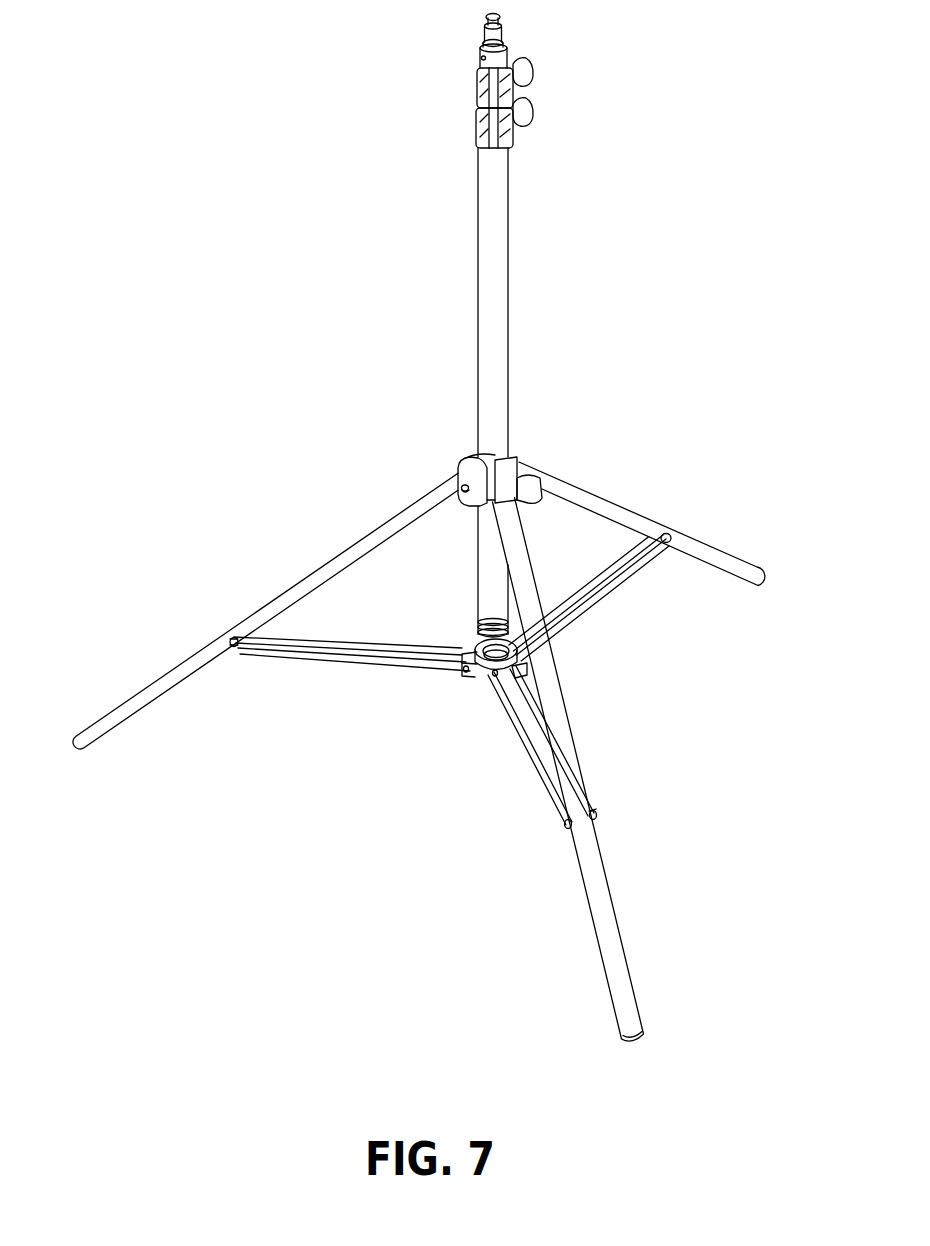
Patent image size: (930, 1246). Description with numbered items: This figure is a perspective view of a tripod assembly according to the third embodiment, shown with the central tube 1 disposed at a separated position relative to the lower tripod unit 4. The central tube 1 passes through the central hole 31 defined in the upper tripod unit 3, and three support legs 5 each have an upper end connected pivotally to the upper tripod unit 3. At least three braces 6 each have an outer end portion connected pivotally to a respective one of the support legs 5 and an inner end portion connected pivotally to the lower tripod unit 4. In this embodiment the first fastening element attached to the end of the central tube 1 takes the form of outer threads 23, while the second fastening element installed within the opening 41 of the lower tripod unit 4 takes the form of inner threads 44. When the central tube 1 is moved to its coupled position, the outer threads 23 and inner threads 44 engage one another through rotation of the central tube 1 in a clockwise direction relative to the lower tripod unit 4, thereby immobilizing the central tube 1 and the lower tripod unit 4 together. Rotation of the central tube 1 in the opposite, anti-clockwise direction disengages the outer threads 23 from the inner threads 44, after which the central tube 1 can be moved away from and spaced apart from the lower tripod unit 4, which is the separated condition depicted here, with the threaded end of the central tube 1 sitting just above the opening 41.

The central tube 1 is at (508, 323).
The upper tripod unit 3 is at (512, 455).
The central hole 31 is at (478, 462).
The support legs 5 is at (644, 512).
The braces 6 is at (603, 587).
The outer threads 23 is at (478, 622).
The lower tripod unit 4 is at (471, 673).
The opening 41 is at (492, 657).
The inner threads 44 is at (478, 648).